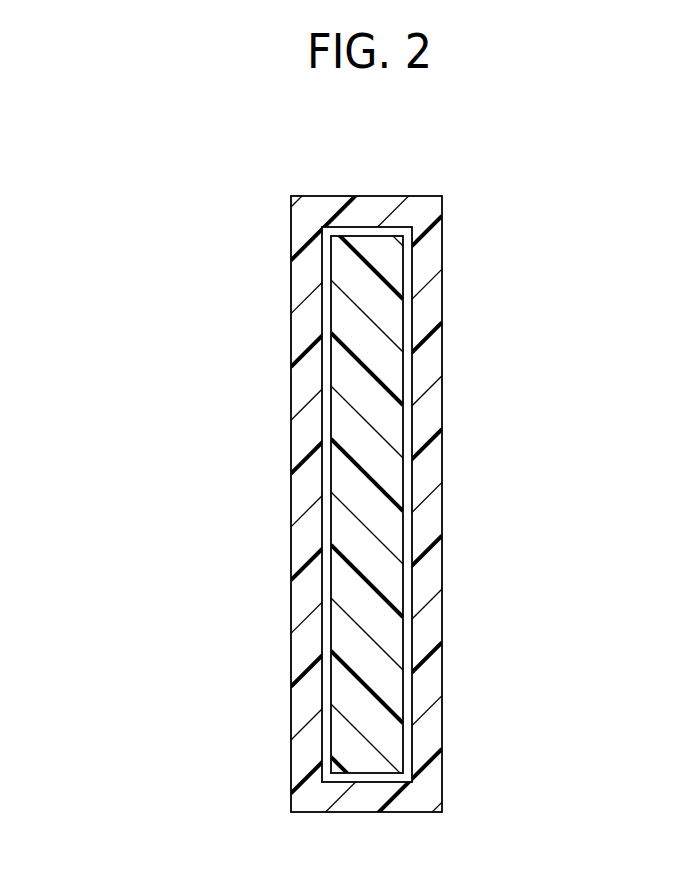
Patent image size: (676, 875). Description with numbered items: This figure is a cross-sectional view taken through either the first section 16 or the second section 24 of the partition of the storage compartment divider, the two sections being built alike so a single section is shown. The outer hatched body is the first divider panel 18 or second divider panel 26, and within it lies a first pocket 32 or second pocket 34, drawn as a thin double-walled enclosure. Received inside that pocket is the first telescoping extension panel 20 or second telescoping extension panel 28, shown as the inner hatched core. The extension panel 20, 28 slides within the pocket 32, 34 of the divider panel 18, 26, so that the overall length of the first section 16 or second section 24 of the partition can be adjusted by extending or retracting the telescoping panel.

The first section 16 is at (329, 465).
The second section 24 is at (329, 465).
The first divider panel 18 is at (459, 465).
The second divider panel 26 is at (428, 258).
The first telescoping extension panel 20 is at (260, 501).
The second telescoping extension panel 28 is at (343, 525).
The first pocket 32 is at (472, 504).
The second pocket 34 is at (405, 731).